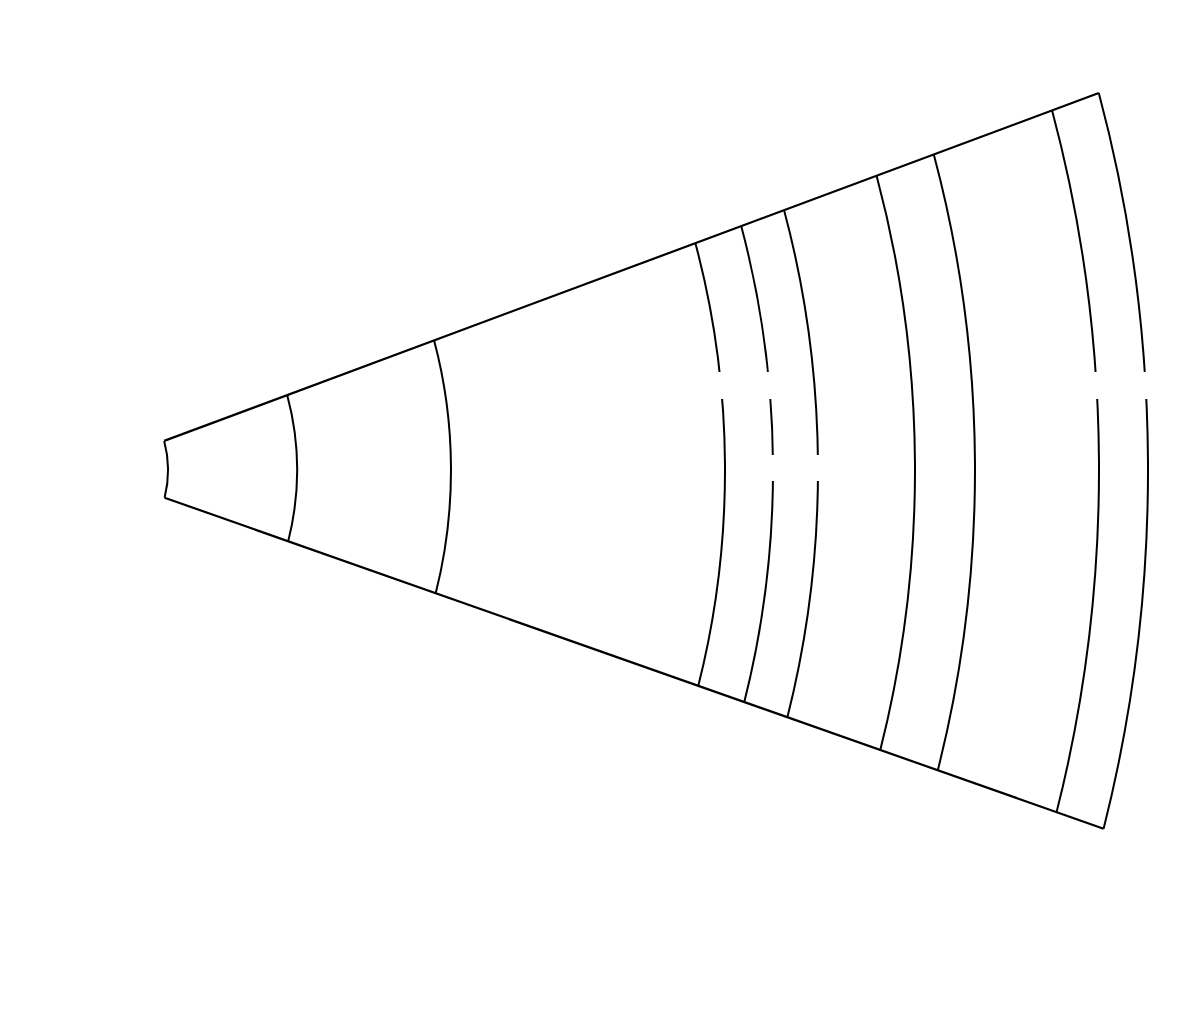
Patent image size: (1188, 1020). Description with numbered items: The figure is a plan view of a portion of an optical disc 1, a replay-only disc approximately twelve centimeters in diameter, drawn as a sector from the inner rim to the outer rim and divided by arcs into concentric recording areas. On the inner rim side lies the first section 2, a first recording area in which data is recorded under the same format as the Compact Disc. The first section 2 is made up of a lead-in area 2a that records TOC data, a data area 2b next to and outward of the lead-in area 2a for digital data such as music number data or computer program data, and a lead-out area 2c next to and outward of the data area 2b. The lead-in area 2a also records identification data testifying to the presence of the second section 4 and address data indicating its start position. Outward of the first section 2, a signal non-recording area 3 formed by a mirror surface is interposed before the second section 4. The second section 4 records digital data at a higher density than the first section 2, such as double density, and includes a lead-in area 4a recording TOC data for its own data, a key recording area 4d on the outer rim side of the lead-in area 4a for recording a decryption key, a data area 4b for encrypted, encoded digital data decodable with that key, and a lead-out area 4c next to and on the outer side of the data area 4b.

The optical disc 1 is at (401, 207).
The first section 2 is at (326, 303).
The lead-in area 2a is at (361, 382).
The data area 2b is at (555, 315).
The lead-out area 2c is at (718, 250).
The signal non-recording area 3 is at (760, 232).
The second section 4 is at (786, 135).
The lead-in area 4a is at (835, 208).
The key recording area 4d is at (908, 180).
The data area 4b is at (980, 150).
The lead-out area 4c is at (1072, 118).